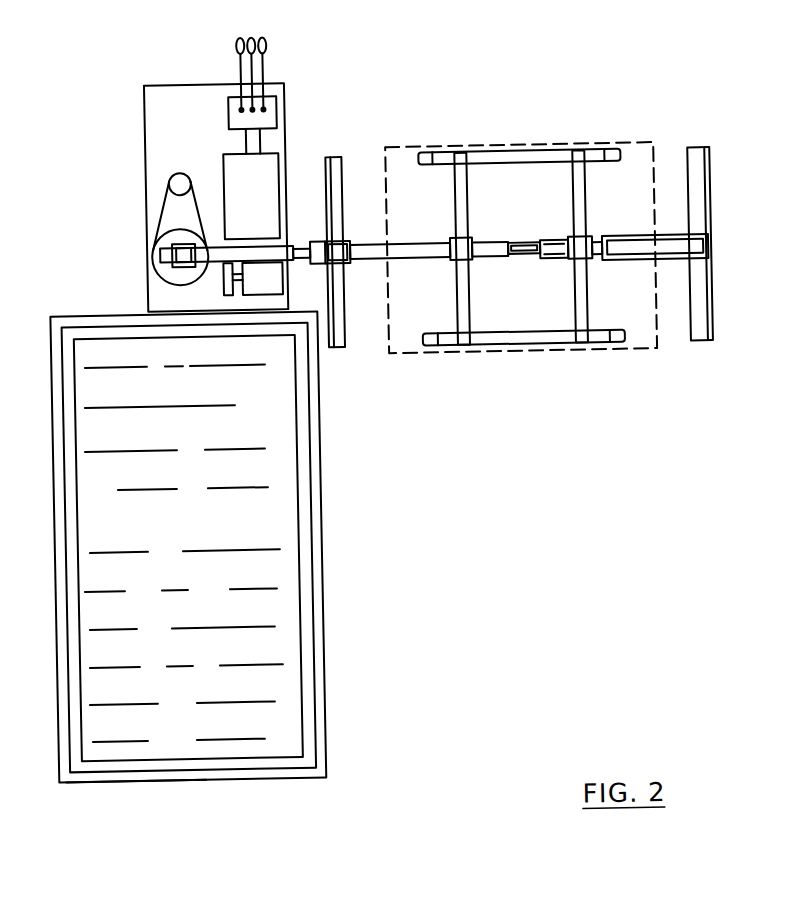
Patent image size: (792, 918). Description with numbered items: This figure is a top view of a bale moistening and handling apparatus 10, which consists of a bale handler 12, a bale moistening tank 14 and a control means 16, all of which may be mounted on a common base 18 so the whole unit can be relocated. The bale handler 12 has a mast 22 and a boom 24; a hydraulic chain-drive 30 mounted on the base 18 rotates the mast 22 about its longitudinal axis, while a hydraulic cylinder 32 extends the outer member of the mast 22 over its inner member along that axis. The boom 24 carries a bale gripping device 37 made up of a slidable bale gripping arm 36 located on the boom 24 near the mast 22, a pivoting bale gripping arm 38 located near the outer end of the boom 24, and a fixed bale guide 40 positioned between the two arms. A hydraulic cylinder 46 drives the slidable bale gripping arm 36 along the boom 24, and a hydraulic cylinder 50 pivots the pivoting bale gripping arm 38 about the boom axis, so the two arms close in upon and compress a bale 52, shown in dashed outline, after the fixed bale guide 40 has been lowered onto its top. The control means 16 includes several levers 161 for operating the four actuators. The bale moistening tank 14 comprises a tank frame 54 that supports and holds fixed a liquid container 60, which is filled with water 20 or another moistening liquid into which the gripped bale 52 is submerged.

The bale moistening and handling apparatus 10 is at (477, 805).
The bale handler 12 is at (364, 119).
The bale moistening tank 14 is at (292, 775).
The control means 16 is at (275, 164).
The levers 161 is at (240, 40).
The common base 18 is at (172, 776).
The water 20 is at (288, 568).
The mast 22 is at (177, 270).
The boom 24 is at (407, 253).
The hydraulic chain-drive 30 is at (150, 206).
The hydraulic cylinder 32 is at (156, 254).
The slidable bale gripping arm 36 is at (340, 327).
The bale gripping device 37 is at (585, 366).
The pivoting bale gripping arm 38 is at (705, 208).
The fixed bale guide 40 is at (526, 355).
The hydraulic cylinder 46 is at (306, 233).
The hydraulic cylinder 50 is at (680, 264).
The bale 52 is at (559, 148).
The tank frame 54 is at (314, 526).
The liquid container 60 is at (304, 496).